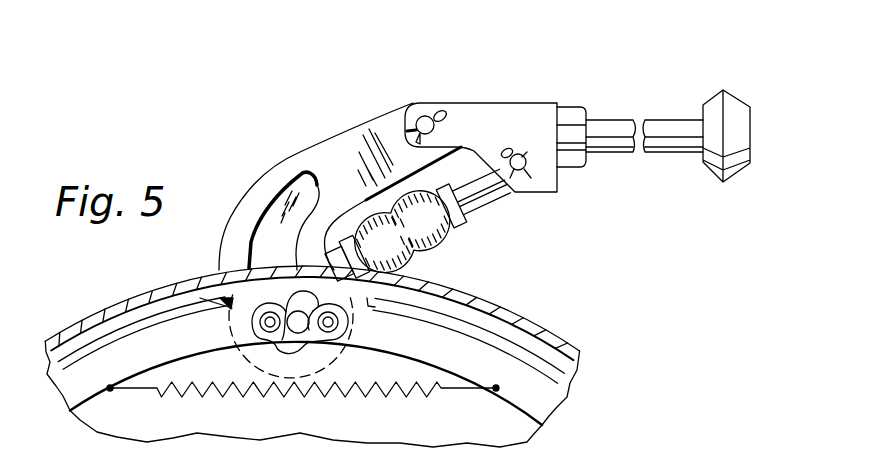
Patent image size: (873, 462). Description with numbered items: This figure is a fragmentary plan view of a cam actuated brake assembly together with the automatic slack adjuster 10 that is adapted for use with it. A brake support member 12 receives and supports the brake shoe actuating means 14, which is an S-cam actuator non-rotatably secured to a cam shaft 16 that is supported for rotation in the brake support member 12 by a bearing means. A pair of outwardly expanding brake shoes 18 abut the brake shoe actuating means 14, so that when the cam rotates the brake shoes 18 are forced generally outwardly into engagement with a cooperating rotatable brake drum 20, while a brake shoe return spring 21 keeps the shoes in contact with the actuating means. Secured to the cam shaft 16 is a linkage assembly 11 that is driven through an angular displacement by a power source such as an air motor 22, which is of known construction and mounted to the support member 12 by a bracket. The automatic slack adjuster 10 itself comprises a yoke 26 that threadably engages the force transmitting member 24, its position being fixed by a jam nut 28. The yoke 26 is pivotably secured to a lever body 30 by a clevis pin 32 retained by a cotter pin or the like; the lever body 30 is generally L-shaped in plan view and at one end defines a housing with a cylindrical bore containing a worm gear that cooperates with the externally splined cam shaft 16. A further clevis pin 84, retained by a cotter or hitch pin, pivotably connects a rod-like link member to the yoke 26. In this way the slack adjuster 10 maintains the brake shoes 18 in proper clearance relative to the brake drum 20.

The automatic slack adjuster 10 is at (322, 132).
The linkage assembly 11 is at (565, 191).
The brake support member 12 is at (547, 442).
The brake shoe actuating means 14 is at (292, 347).
The cam shaft 16 is at (300, 326).
The brake shoes 18 is at (143, 362).
The brake drum 20 is at (547, 345).
The brake shoe return spring 21 is at (352, 398).
The air motor 22 is at (732, 99).
The force transmitting member 24 is at (664, 127).
The yoke 26 is at (482, 118).
The jam nut 28 is at (580, 107).
The lever body 30 is at (373, 133).
The clevis pin 32 is at (425, 116).
The clevis pin 84 is at (524, 158).